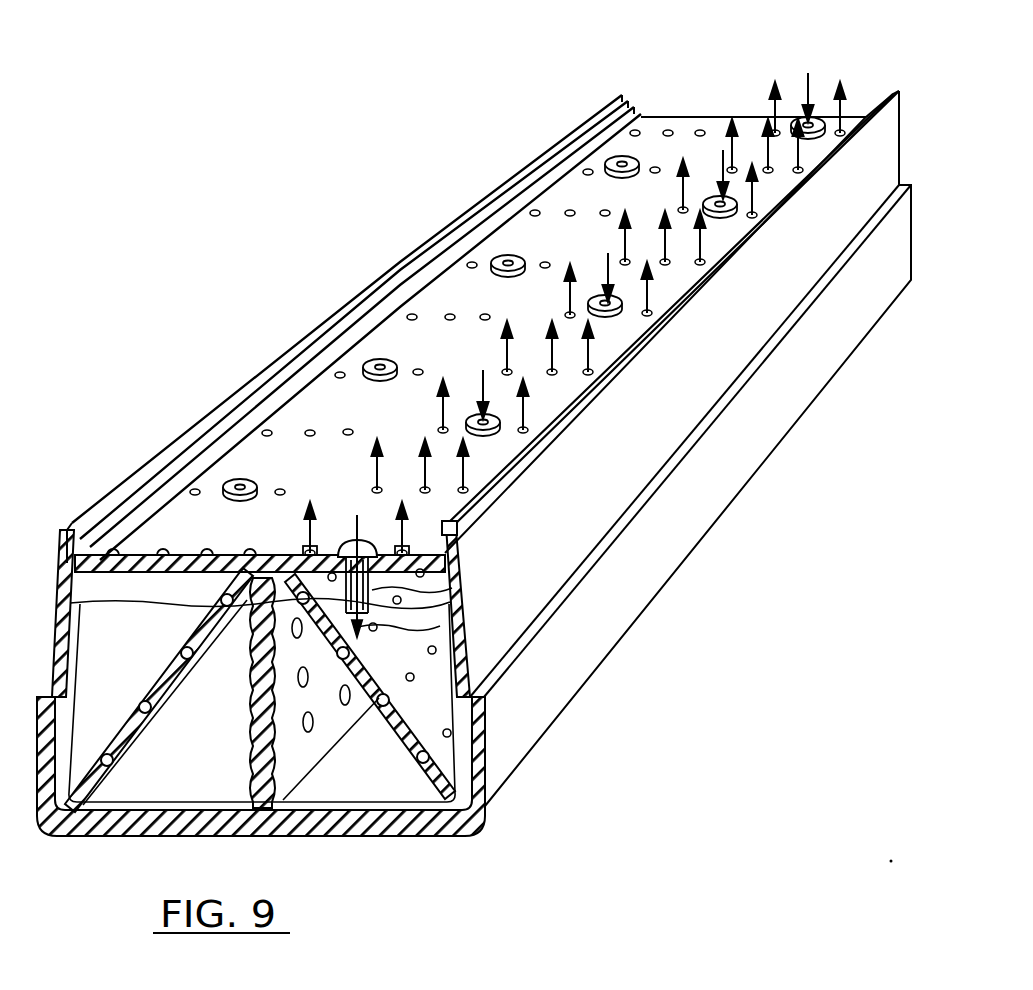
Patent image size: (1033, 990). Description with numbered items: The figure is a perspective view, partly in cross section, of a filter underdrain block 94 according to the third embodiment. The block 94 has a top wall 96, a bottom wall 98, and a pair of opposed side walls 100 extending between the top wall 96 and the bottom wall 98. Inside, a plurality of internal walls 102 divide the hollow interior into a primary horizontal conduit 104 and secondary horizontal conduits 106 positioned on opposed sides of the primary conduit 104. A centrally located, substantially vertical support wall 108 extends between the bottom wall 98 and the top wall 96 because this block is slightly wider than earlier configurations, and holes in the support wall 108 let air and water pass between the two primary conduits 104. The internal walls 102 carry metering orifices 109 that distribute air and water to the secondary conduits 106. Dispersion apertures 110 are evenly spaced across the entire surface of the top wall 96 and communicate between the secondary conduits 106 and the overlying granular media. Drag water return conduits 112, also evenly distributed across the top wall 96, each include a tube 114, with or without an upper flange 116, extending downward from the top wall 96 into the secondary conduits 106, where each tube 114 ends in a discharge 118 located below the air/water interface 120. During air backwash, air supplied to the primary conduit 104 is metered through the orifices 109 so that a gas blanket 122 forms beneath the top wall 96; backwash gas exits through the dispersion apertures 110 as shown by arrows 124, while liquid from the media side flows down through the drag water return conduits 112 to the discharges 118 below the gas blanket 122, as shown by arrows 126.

The block 94 is at (60, 445).
The top wall 96 is at (307, 407).
The bottom wall 98 is at (278, 823).
The side walls 100 is at (70, 618).
The internal walls 102 is at (118, 745).
The primary horizontal conduit 104 is at (233, 739).
The secondary horizontal conduits 106 is at (130, 711).
The support wall 108 is at (270, 740).
The metering orifices 109 is at (85, 812).
The dispersion apertures 110 is at (265, 430).
The drag water return conduits 112 is at (636, 156).
The tube 114 is at (462, 569).
The upper flange 116 is at (450, 531).
The discharge 118 is at (463, 606).
The air/water interface 120 is at (100, 527).
The gas blanket 122 is at (157, 583).
The arrows 124 is at (535, 395).
The arrows 126 is at (500, 433).